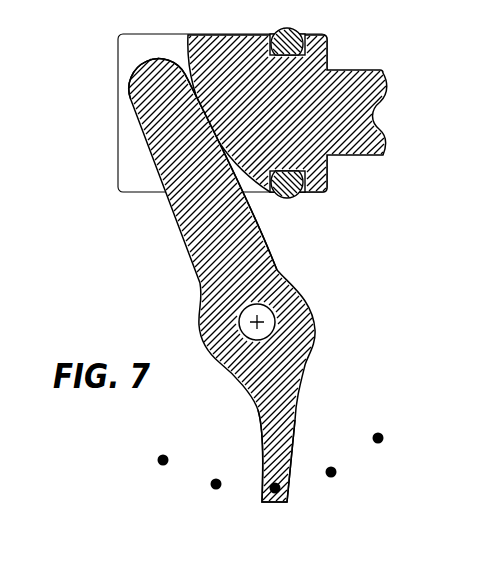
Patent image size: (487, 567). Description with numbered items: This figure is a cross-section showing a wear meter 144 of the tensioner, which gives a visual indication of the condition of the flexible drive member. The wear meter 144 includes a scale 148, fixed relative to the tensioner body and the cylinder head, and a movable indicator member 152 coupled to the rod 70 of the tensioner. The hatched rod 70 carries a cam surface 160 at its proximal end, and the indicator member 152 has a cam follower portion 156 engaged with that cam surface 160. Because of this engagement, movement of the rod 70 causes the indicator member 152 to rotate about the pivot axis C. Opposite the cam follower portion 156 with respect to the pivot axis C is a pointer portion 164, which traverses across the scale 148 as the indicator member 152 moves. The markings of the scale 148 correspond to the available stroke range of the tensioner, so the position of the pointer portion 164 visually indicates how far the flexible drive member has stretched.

The rod 70 is at (360, 155).
The wear meter 144 is at (100, 172).
The scale 148 is at (382, 412).
The movable indicator member 152 is at (160, 275).
The cam follower portion 156 is at (147, 77).
The cam surface 160 is at (210, 143).
The pointer portion 164 is at (290, 448).
The pivot axis C is at (272, 312).